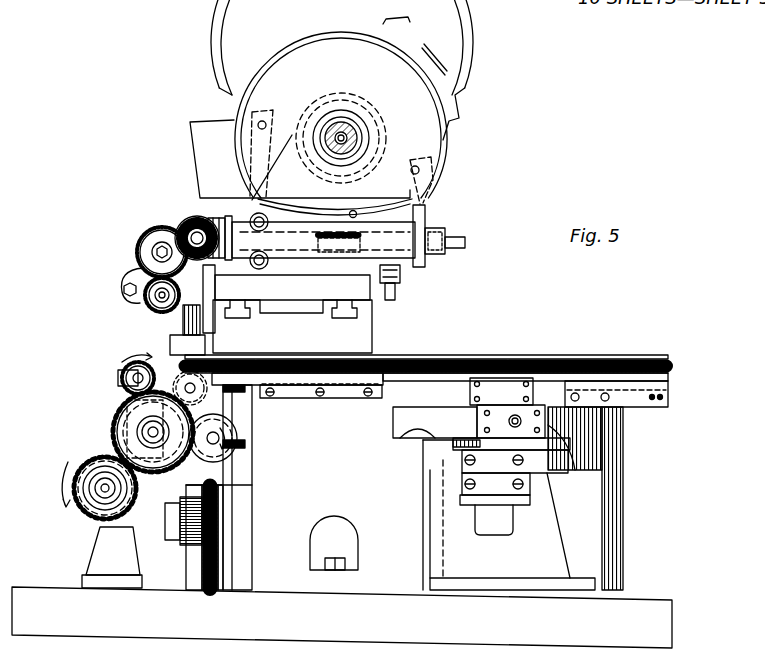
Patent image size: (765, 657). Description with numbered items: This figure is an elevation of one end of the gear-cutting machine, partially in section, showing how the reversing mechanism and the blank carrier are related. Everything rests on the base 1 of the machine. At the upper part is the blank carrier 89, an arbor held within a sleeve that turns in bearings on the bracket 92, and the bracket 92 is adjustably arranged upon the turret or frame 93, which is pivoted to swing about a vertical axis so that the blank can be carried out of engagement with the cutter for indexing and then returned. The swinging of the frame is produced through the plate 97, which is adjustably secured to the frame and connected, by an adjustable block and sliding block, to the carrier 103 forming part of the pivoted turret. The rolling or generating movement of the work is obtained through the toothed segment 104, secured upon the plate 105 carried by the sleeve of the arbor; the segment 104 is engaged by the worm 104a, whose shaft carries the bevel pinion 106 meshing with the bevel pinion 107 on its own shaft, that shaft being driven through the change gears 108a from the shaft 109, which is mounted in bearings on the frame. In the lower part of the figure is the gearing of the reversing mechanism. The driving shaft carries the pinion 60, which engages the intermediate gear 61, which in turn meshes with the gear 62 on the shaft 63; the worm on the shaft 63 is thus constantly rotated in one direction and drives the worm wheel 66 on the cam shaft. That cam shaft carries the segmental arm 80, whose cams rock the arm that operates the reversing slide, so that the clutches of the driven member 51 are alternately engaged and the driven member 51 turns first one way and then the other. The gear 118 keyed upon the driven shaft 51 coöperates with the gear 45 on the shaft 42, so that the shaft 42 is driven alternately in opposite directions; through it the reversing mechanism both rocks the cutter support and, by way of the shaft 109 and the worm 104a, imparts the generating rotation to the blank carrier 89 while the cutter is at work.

The base 1 is at (342, 617).
The shaft 42 is at (100, 493).
The gear 45 is at (78, 466).
The driven member 51 is at (156, 436).
The pinion 60 is at (122, 373).
The intermediate gear 61 is at (197, 383).
The gear 62 is at (186, 413).
The shaft 63 is at (220, 440).
The worm wheel 66 is at (218, 528).
The segmental arm 80 is at (186, 540).
The blank carrier 89 is at (348, 130).
The bracket 92 is at (292, 287).
The turret or frame 93 is at (292, 326).
The plate 97 is at (435, 422).
The carrier 103 is at (507, 408).
The toothed segment 104 is at (376, 212).
The worm 104a is at (337, 240).
The plate 105 is at (331, 109).
The bevel pinion 106 is at (213, 222).
The bevel pinion 107 is at (187, 225).
The change gears 108a is at (150, 250).
The shaft 109 is at (160, 302).
The gear 118 is at (113, 422).